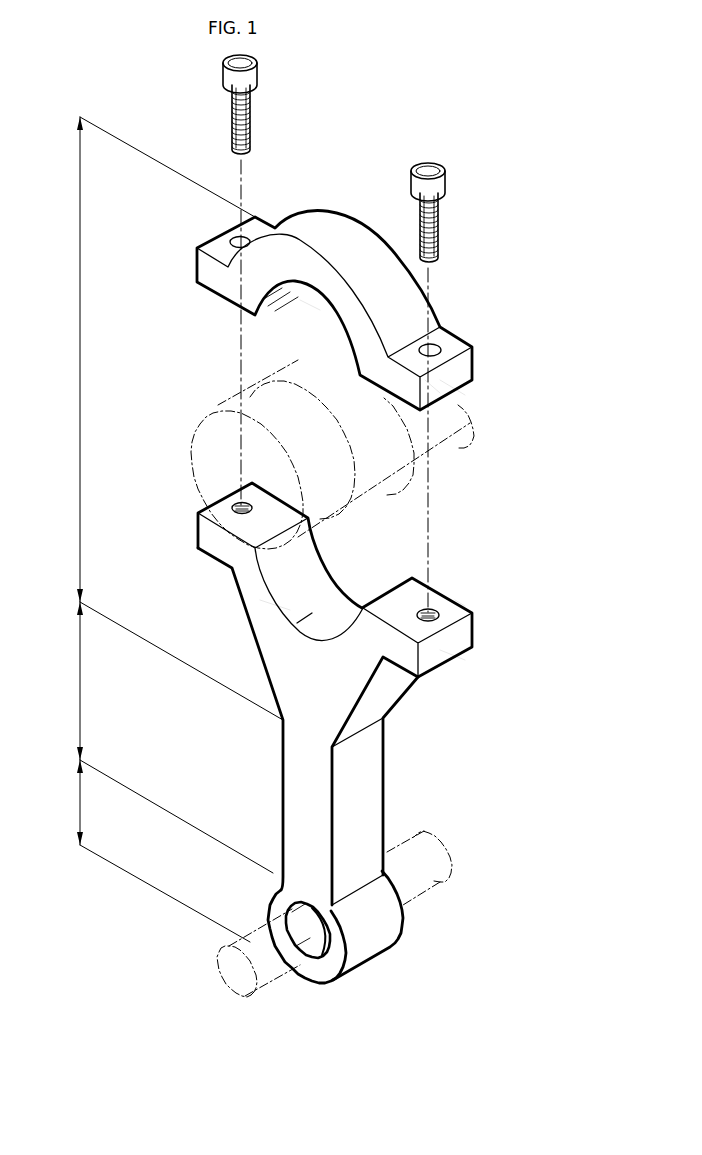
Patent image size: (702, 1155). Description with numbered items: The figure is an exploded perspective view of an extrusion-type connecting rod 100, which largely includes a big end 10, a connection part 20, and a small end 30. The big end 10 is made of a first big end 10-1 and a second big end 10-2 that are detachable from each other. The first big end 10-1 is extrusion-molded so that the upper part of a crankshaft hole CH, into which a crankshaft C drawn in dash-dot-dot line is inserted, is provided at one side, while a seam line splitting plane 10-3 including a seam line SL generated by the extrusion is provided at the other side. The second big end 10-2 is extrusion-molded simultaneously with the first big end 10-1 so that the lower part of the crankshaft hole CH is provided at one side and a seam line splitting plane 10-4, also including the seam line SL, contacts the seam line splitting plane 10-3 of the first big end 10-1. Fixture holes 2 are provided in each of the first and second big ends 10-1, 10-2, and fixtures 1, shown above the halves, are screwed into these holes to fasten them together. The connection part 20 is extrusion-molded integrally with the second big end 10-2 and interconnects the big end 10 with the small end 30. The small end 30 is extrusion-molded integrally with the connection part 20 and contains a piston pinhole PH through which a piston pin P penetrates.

The extrusion-type connecting rod 100 is at (466, 214).
The fixture 1 is at (256, 121).
The fixture hole 2 is at (235, 238).
The big end 10 is at (166, 418).
The first big end 10-1 is at (466, 366).
The second big end 10-2 is at (443, 651).
The seam line splitting plane 10-3 is at (442, 384).
The seam line splitting plane 10-4 is at (470, 594).
The connection part 20 is at (161, 737).
The small end 30 is at (150, 851).
The crankshaft C is at (217, 403).
The crankshaft hole CH is at (318, 300).
The seam line SL is at (465, 388).
The piston pin P is at (263, 990).
The piston pinhole PH is at (340, 978).